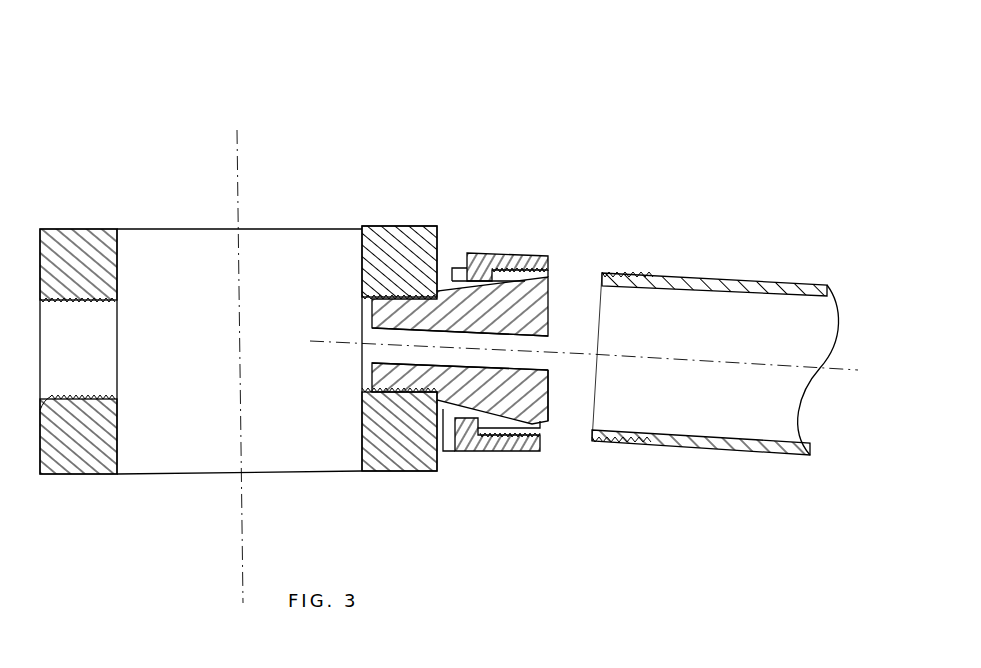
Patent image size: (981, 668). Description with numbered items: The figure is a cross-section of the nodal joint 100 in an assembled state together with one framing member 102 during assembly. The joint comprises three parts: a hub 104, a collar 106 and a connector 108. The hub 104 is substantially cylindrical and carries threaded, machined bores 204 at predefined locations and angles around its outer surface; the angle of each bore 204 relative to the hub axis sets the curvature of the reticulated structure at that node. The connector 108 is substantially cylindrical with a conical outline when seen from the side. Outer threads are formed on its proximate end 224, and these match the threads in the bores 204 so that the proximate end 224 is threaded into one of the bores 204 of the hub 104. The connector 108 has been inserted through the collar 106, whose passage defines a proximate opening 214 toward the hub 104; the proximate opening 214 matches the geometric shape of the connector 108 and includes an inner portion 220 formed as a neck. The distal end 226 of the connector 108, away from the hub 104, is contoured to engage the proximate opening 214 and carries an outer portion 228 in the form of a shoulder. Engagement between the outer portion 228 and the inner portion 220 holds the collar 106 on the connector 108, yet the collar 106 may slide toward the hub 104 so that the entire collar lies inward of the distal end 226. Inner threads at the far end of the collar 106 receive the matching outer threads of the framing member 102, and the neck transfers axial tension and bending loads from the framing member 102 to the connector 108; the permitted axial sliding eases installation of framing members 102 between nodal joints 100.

The nodal joint 100 is at (426, 50).
The framing member 102 is at (713, 277).
The hub 104 is at (394, 234).
The collar 106 is at (518, 260).
The connector 108 is at (493, 291).
The threaded bore 204 is at (365, 316).
The proximate opening 214 is at (452, 282).
The inner portion 220 is at (455, 436).
The proximate end 224 is at (368, 357).
The distal end 226 is at (548, 391).
The outer portion 228 is at (537, 421).